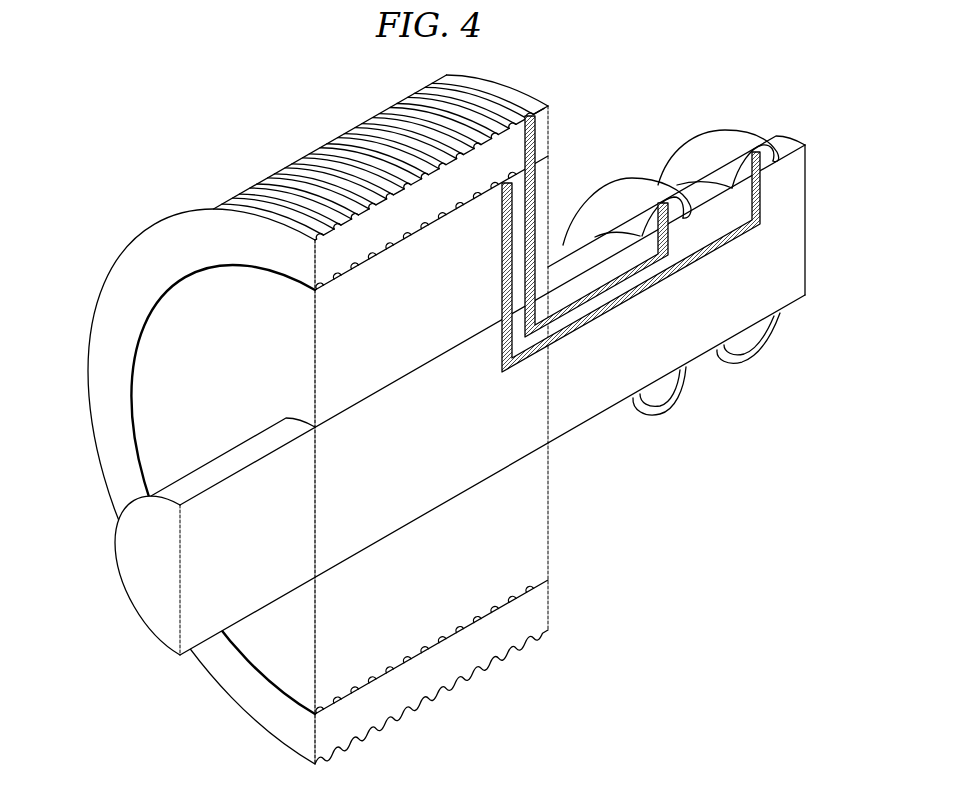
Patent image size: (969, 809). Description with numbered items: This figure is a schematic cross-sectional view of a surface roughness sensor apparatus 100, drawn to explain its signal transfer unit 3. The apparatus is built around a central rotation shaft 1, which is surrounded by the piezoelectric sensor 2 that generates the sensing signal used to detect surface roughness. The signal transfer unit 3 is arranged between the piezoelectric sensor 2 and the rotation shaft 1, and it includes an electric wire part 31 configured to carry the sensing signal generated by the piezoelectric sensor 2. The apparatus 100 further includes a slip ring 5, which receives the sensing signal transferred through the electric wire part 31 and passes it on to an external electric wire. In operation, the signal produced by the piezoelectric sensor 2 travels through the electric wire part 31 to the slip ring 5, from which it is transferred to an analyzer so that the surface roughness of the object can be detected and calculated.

The surface roughness sensor apparatus 100 is at (222, 106).
The rotation shaft 1 is at (212, 560).
The piezoelectric sensor 2 is at (362, 242).
The signal transfer unit 3 is at (370, 322).
The electric wire part 31 is at (537, 197).
The slip ring 5 is at (704, 148).